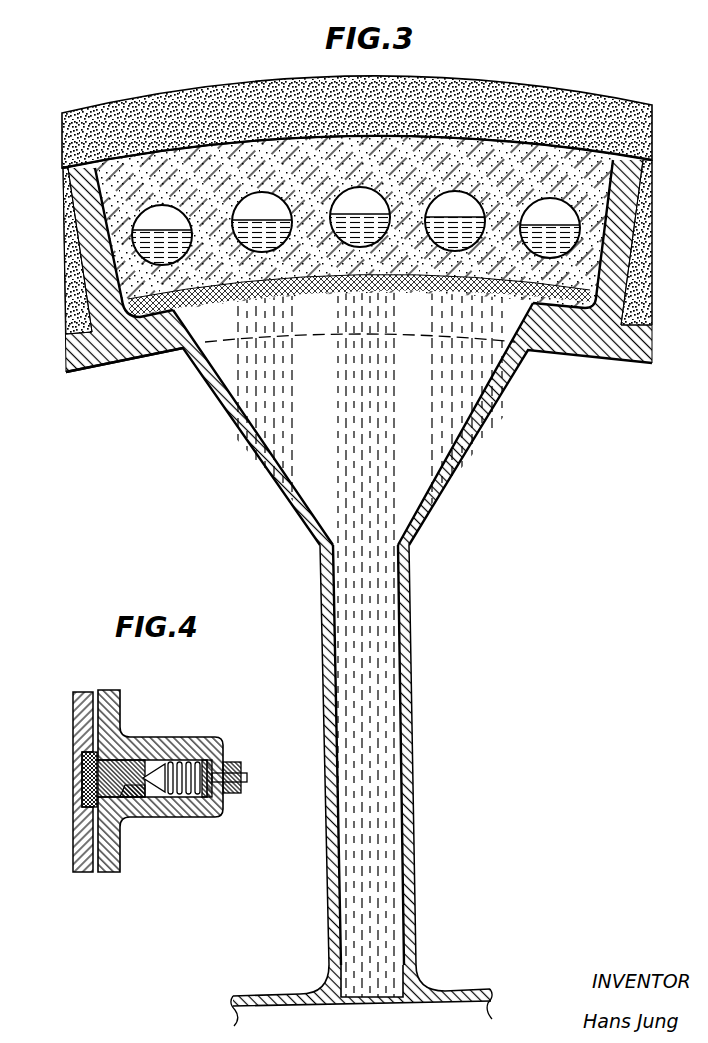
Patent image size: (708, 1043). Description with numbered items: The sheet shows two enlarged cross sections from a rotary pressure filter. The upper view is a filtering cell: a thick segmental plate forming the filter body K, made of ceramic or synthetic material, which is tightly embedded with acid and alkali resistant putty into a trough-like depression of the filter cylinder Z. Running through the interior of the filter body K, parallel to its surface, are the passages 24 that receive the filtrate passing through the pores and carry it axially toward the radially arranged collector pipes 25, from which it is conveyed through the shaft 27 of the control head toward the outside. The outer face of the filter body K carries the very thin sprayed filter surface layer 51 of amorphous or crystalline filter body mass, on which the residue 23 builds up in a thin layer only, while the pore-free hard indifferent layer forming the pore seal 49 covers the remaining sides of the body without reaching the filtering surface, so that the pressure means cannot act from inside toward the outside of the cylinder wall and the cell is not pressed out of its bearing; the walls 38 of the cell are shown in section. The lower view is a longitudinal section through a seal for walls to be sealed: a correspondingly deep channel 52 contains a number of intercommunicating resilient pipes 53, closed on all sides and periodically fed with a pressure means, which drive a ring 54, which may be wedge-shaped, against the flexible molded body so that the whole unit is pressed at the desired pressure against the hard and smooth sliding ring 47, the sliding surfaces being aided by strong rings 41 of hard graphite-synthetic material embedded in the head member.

In FIG. 3, the dehumidified solid residue 23 is at (653, 130).
In FIG. 3, the passages for the filtrate 24 is at (434, 243).
In FIG. 3, the collector pipes 25 is at (410, 648).
In FIG. 3, the shaft of the control head 27 is at (474, 990).
In FIG. 3, the housing wall 38 is at (636, 186).
In FIG. 3, the pore seal 49 is at (302, 286).
In FIG. 3, the filter surface layer 51 is at (157, 165).
In FIG. 3, the filter body K is at (560, 158).
In FIG. 3, the filter cylinder Z is at (108, 361).
In FIG. 4, the rings of hard graphite-synthetic material 41 is at (82, 781).
In FIG. 4, the sliding ring 47 is at (106, 764).
In FIG. 4, the channel 52 is at (160, 762).
In FIG. 4, the resilient pipes 53 is at (188, 797).
In FIG. 4, the wedge-shaped ring 54 is at (130, 798).